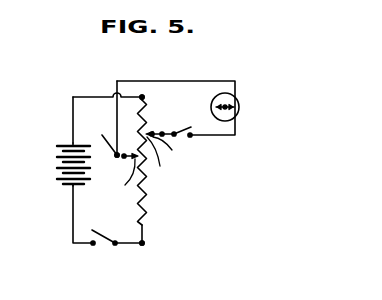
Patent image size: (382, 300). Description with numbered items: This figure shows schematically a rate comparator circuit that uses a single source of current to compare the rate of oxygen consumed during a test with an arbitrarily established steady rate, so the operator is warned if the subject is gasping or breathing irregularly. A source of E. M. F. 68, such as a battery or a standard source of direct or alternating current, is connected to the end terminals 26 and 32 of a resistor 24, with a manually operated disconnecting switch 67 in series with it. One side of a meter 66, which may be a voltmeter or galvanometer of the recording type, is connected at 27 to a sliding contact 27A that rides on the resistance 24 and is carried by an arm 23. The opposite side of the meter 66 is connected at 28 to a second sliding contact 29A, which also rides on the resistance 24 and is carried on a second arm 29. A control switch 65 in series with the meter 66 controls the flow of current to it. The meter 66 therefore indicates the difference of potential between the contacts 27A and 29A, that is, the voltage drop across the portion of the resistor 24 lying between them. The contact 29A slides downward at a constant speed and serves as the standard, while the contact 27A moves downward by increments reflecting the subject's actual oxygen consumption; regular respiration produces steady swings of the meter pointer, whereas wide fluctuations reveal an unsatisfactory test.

The arm 23 is at (127, 159).
The resistor 24 is at (148, 212).
The end terminal 26 is at (142, 95).
The connection point 27 is at (102, 136).
The sliding contact 27A is at (116, 183).
The connection point 28 is at (162, 132).
The second arm 29 is at (174, 153).
The second sliding contact 29A is at (171, 161).
The end terminal 32 is at (143, 245).
The control switch 65 is at (187, 138).
The meter 66 is at (238, 101).
The disconnecting switch 67 is at (102, 247).
The source of E. M. F. 68 is at (54, 167).